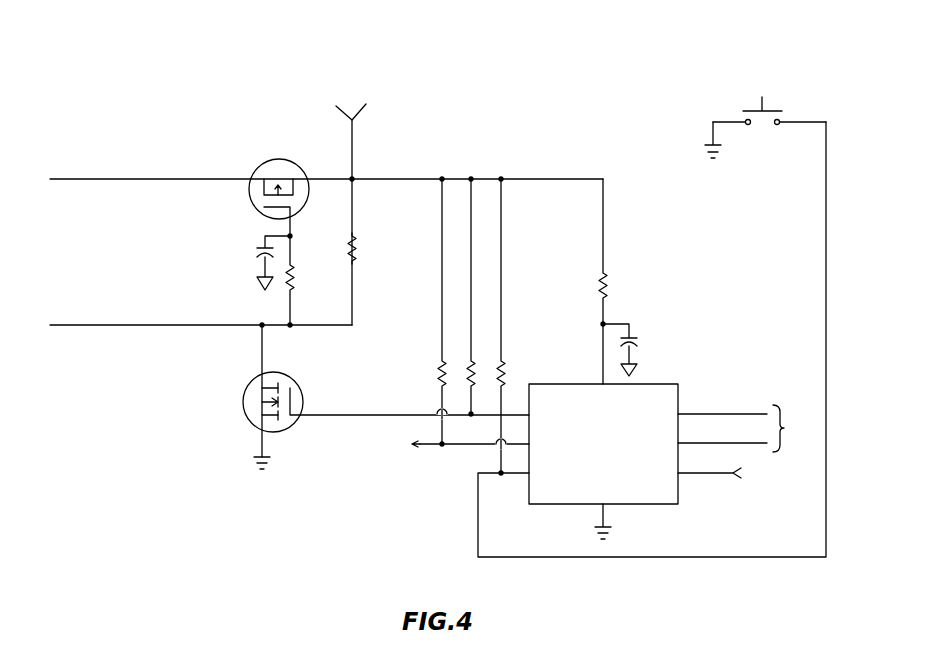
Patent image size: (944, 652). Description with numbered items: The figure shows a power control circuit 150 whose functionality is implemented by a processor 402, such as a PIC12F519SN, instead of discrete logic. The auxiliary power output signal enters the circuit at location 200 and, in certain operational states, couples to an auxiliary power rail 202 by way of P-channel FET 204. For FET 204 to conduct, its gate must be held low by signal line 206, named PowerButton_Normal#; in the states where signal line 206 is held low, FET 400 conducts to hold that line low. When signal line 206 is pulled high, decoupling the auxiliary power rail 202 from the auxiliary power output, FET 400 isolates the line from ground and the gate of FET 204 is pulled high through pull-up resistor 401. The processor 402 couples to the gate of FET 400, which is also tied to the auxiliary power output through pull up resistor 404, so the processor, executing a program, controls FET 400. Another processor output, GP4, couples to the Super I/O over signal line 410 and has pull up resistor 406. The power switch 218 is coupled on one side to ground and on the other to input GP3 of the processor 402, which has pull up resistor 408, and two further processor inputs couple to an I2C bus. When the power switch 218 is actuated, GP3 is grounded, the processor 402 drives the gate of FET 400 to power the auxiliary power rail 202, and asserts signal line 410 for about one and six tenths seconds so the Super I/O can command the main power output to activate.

The power control circuit 150 is at (247, 543).
The location 200 is at (352, 145).
The auxiliary power rail 202 is at (108, 180).
The P-channel FET 204 is at (270, 160).
The signal line 206 is at (103, 327).
The power switch 218 is at (793, 112).
The FET 400 is at (243, 405).
The pull-up resistor 401 is at (355, 238).
The processor 402 is at (665, 384).
The pull up resistor 404 is at (473, 360).
The pull up resistor 406 is at (440, 363).
The pull up resistor 408 is at (503, 360).
The signal line 410 is at (460, 446).